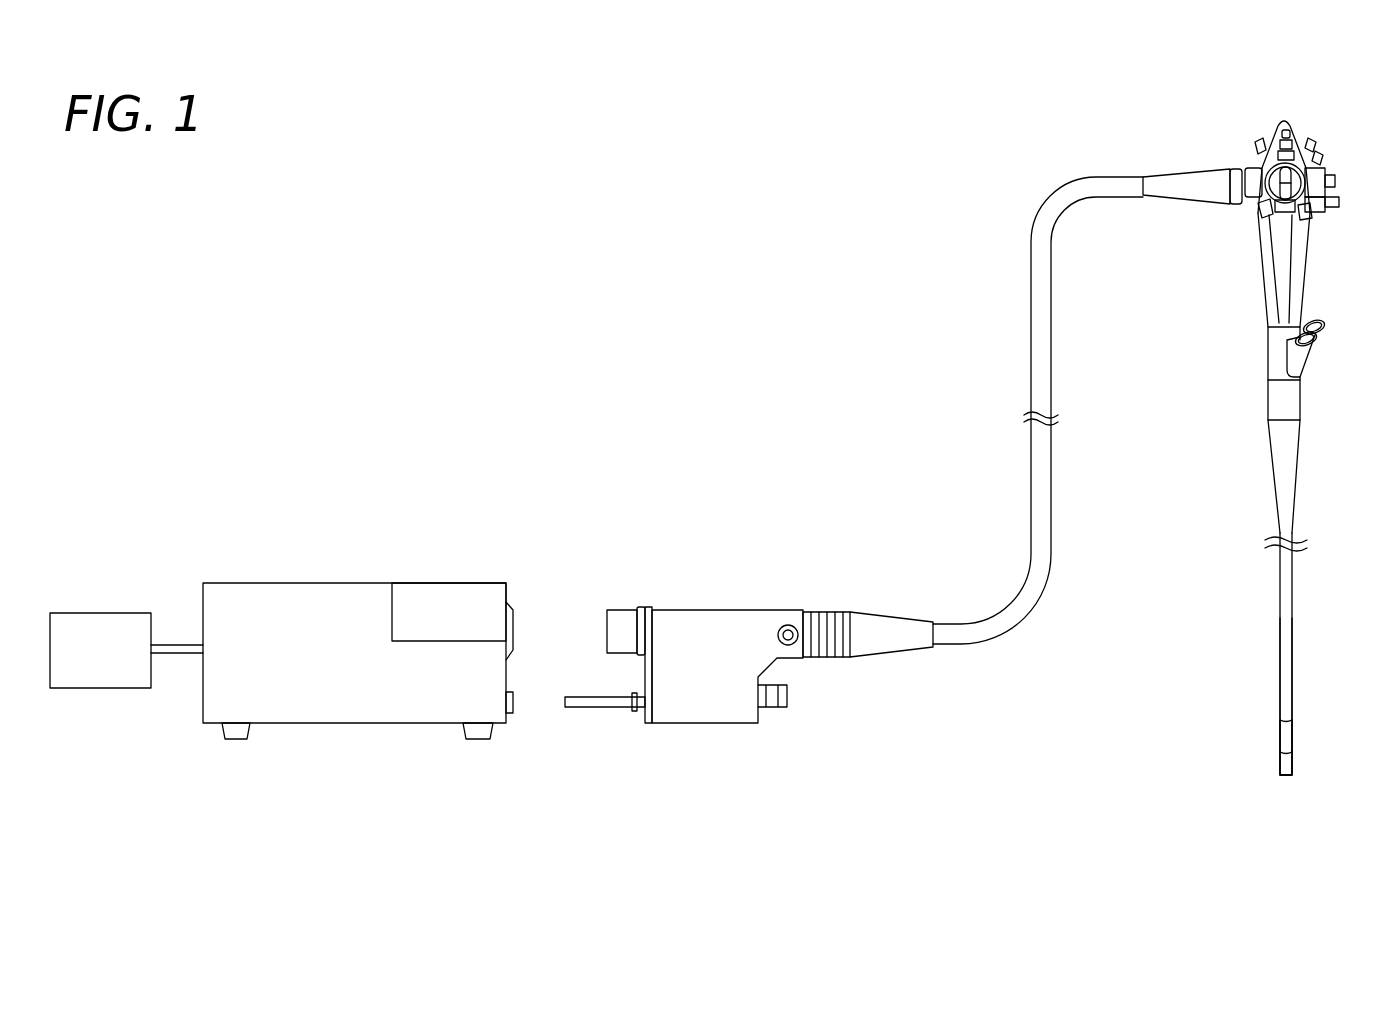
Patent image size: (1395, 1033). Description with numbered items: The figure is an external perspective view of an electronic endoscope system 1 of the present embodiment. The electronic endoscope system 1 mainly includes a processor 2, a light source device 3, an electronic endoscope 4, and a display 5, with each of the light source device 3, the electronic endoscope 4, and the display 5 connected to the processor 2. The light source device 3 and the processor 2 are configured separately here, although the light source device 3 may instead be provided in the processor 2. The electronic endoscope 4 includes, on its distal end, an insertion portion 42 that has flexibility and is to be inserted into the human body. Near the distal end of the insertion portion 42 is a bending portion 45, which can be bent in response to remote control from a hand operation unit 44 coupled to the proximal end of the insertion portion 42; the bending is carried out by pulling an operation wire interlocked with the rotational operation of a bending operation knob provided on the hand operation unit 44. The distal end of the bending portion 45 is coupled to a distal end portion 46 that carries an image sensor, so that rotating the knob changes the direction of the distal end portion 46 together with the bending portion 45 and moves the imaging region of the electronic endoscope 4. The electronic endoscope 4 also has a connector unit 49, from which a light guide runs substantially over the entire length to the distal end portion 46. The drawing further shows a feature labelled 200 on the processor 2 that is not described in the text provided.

The electronic endoscope system 1 is at (853, 312).
The processor 2 is at (396, 630).
The light source device 3 is at (437, 592).
The electronic endoscope 4 is at (1164, 451).
The display 5 is at (103, 612).
The insertion portion 42 is at (1337, 699).
The hand operation unit 44 is at (1336, 192).
The bending portion 45 is at (1294, 741).
The distal end portion 46 is at (1315, 767).
The connector unit 49 is at (706, 607).
The connector receptacle 200 is at (509, 669).